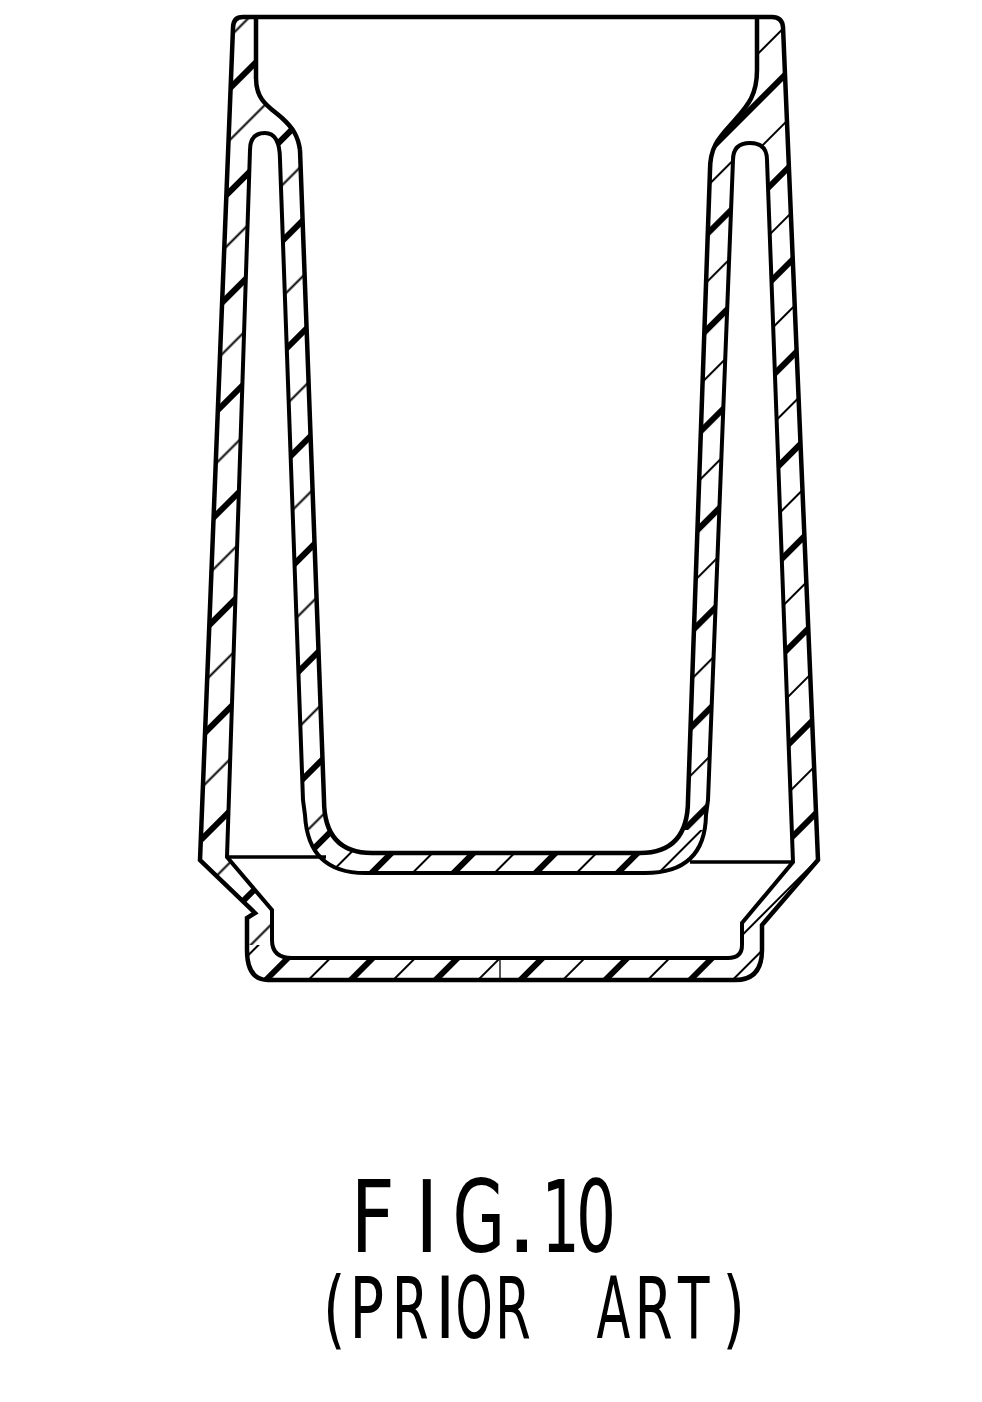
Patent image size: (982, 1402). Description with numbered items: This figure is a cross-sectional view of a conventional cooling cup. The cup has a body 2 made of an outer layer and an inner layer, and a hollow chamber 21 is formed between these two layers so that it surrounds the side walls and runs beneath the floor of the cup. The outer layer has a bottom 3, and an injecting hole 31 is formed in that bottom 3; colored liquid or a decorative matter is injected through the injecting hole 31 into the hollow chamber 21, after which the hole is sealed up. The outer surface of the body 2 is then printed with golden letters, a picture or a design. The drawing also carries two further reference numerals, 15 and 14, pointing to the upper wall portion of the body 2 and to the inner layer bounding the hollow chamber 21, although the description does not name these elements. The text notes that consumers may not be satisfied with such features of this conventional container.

The body 2 is at (188, 559).
The upper rim portion of outer shell 15 is at (238, 208).
The inner liner 14 is at (302, 605).
The hollow chamber 21 is at (258, 436).
The bottom 3 is at (343, 962).
The injecting hole 31 is at (677, 962).